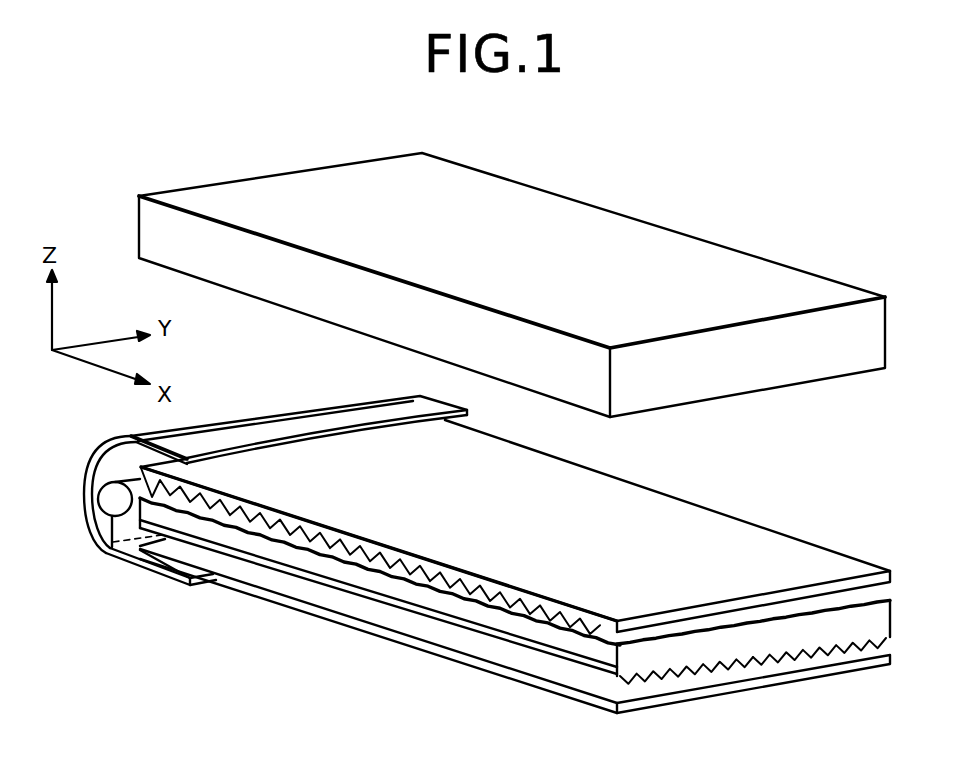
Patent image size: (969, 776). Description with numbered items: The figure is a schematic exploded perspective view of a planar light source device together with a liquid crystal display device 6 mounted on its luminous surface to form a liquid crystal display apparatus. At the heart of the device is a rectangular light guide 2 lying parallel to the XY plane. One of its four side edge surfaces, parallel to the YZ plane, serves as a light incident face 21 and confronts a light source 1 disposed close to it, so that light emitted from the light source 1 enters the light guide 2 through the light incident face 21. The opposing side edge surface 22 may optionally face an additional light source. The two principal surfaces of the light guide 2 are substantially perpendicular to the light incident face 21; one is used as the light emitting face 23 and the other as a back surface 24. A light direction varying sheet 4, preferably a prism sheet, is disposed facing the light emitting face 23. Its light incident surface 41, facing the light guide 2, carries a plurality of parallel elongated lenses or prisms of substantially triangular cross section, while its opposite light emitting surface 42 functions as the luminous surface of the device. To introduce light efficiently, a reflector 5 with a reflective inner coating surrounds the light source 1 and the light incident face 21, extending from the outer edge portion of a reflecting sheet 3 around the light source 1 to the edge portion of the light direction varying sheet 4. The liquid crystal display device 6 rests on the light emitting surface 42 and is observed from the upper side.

The light source 1 is at (108, 497).
The light guide 2 is at (515, 621).
The light incident face 21 is at (111, 552).
The side edge surface 22 is at (820, 640).
The light emitting face 23 is at (377, 574).
The back surface 24 is at (705, 676).
The reflecting sheet 3 is at (558, 697).
The light direction varying sheet 4 is at (515, 569).
The light incident surface 41 is at (492, 612).
The light emitting surface 42 is at (783, 550).
The reflector 5 is at (262, 498).
The liquid crystal display device 6 is at (248, 197).